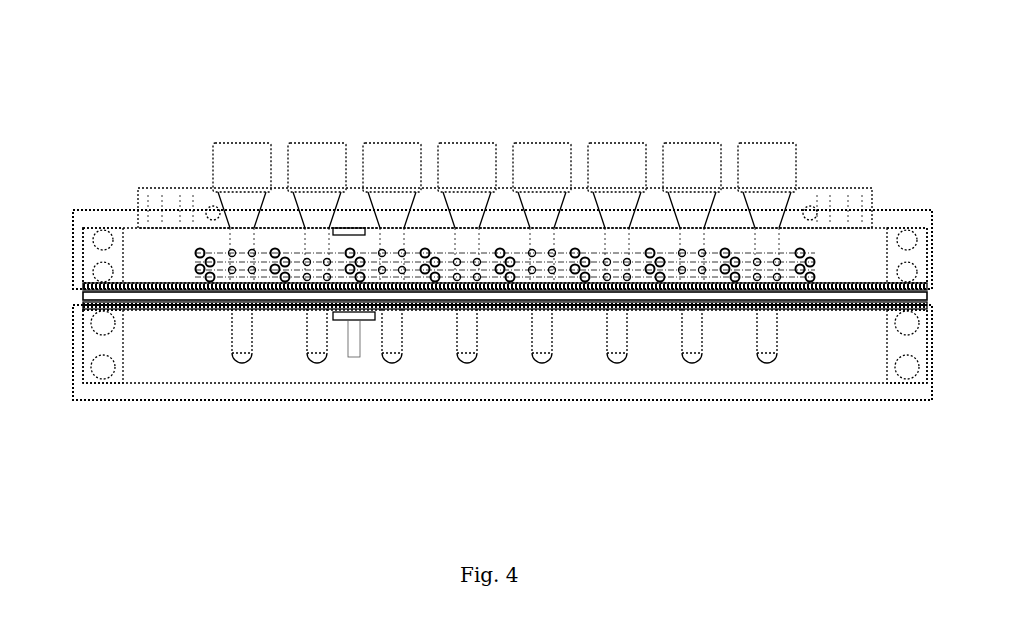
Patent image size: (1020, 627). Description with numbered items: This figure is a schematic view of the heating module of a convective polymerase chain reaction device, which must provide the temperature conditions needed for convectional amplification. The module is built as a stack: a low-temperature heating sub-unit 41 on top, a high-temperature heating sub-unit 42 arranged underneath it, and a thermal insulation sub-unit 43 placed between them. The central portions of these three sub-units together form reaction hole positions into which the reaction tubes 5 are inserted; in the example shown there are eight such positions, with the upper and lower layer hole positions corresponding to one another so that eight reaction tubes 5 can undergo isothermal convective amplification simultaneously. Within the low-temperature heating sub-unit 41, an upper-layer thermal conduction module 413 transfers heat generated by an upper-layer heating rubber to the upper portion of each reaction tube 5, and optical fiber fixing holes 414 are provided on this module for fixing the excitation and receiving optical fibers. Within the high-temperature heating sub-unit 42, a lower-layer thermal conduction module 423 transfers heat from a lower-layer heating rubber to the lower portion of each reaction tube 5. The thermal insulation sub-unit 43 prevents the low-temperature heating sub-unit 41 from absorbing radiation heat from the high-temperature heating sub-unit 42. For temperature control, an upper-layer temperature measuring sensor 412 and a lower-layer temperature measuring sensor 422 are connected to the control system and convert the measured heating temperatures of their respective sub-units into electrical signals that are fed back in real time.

The reaction tube 5 is at (322, 177).
The low-temperature heating sub-unit 41 is at (100, 210).
The upper-layer temperature measuring sensor 412 is at (355, 232).
The upper-layer thermal conduction module 413 is at (868, 255).
The optical fiber fixing hole 414 is at (210, 255).
The high-temperature heating sub-unit 42 is at (463, 400).
The lower-layer temperature measuring sensor 422 is at (355, 313).
The lower-layer thermal conduction module 423 is at (193, 352).
The thermal insulation sub-unit 43 is at (147, 297).